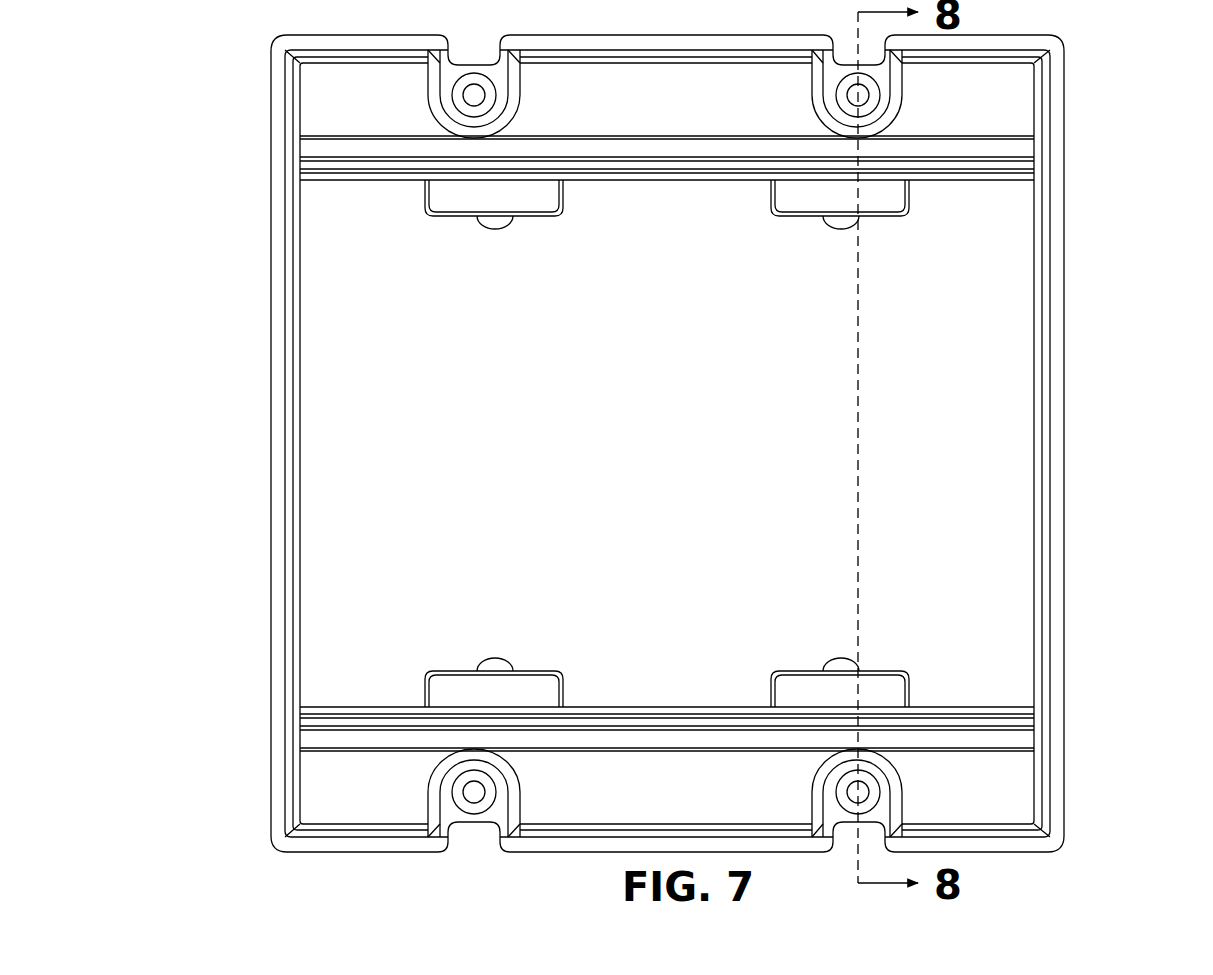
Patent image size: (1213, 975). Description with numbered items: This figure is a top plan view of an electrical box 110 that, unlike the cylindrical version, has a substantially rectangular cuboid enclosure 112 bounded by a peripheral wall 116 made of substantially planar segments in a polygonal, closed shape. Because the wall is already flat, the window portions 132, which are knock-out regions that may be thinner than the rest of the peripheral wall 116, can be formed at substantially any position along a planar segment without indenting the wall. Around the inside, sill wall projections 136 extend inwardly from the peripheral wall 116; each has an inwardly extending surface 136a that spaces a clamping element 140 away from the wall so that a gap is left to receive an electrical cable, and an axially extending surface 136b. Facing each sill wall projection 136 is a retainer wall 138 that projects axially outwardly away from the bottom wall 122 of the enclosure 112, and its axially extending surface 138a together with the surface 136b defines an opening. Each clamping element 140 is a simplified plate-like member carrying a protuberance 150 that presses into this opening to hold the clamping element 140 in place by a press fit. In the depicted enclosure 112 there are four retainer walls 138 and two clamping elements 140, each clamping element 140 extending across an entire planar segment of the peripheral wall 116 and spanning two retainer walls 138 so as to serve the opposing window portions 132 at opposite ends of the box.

The electrical box 110 is at (258, 458).
The enclosure 112 is at (1077, 459).
The peripheral wall 116 is at (272, 340).
The bottom wall 122 is at (390, 518).
The window portions 132 is at (350, 74).
The sill wall projections 136 is at (294, 150).
The inwardly extending surface 136a is at (330, 149).
The axially extending surface 136b is at (397, 158).
The retainer wall 138 is at (537, 198).
The axially extending surface 138a is at (527, 178).
The clamping element 140 is at (672, 162).
The protuberance 150 is at (363, 182).